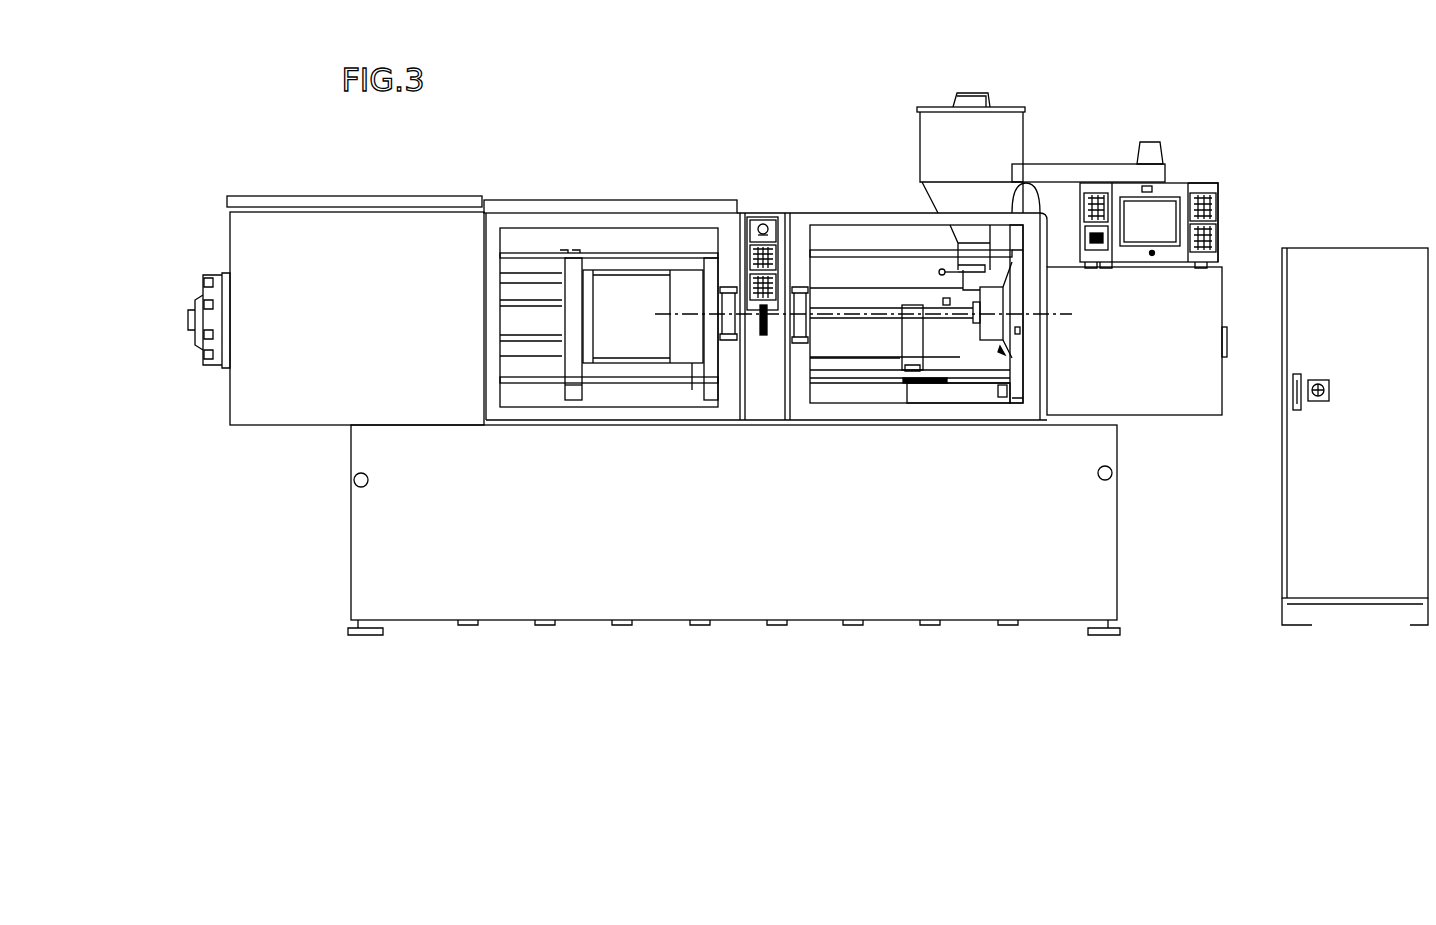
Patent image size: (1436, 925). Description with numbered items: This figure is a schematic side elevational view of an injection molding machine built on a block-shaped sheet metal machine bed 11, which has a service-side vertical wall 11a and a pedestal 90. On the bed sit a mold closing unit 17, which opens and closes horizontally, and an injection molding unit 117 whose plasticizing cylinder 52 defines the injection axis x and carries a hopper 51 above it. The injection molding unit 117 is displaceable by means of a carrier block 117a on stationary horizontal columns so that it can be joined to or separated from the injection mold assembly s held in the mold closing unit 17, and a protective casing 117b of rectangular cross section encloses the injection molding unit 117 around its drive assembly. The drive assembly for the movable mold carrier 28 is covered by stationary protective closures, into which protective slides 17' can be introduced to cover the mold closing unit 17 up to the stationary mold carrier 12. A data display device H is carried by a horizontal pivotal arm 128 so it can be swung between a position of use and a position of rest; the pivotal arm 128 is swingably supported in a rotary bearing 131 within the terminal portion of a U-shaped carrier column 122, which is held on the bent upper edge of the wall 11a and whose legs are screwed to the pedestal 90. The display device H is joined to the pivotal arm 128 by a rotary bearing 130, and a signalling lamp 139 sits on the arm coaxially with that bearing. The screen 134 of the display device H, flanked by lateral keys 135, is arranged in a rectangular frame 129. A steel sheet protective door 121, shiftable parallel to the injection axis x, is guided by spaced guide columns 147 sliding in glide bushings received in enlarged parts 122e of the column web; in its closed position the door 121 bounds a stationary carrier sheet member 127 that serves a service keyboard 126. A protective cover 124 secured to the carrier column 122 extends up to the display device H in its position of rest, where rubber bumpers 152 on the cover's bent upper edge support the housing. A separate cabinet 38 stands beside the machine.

The machine bed 11 is at (1083, 583).
The service-side vertical wall 11a is at (958, 593).
The stationary mold carrier 12 is at (708, 355).
The mold closing unit 17 is at (764, 259).
The protective slides 17' is at (613, 267).
The movable mold carrier 28 is at (572, 330).
The injection mold assembly s is at (687, 327).
The injection axis x is at (866, 315).
The control cabinet 38 is at (1353, 293).
The material hopper 51 is at (1000, 133).
The plasticizing cylinder 52 is at (870, 365).
The pedestal 90 is at (937, 395).
The injection molding unit 117 is at (1220, 319).
The carrier block 117a is at (992, 405).
The protective casing 117b is at (1227, 350).
The protective door 121 is at (864, 200).
The carrier column 122 is at (1025, 405).
The enlarged parts 122e is at (1017, 252).
The protective cover 124 is at (1160, 400).
The service keyboard 126 is at (757, 220).
The carrier sheet member 127 is at (757, 398).
The pivotal arm 128 is at (1065, 173).
The rectangular frame 129 is at (1205, 183).
The rotary bearing 130 is at (1206, 167).
The rotary bearing 131 is at (1020, 185).
The screen 134 is at (1218, 190).
The lateral keys 135 is at (1218, 235).
The signalling lamp 139 is at (1150, 150).
The guide columns 147 is at (828, 248).
The rubber bumpers 152 is at (1100, 268).
The data display device H is at (1248, 197).